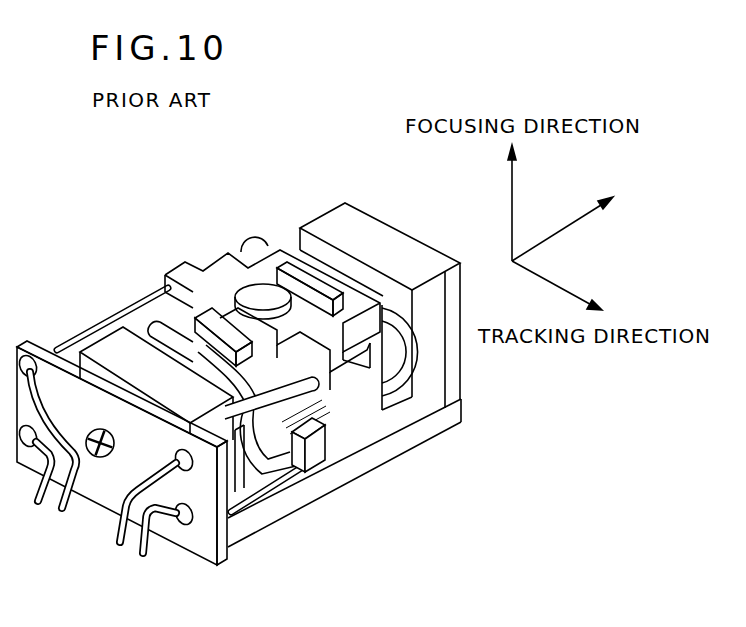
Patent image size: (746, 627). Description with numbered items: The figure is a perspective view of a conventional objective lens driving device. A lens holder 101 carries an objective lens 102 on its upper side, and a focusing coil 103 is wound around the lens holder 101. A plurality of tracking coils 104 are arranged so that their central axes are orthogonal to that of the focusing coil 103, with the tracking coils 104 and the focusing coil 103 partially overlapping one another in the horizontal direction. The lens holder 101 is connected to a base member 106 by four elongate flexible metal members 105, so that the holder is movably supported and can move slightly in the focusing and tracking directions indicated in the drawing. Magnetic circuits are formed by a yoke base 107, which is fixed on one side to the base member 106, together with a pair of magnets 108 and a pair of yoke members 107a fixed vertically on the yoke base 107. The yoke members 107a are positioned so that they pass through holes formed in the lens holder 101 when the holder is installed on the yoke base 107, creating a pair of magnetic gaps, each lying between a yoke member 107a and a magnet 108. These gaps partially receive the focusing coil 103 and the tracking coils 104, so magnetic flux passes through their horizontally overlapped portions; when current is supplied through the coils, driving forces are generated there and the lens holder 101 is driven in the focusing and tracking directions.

The lens holder 101 is at (183, 275).
The objective lens 102 is at (265, 288).
The focusing coil 103 is at (312, 427).
The tracking coils 104 is at (402, 383).
The elongate flexible metal members 105 is at (147, 300).
The base member 106 is at (190, 543).
The yoke base 107 is at (253, 520).
The yoke members 107a is at (222, 327).
The magnets 108 is at (115, 345).